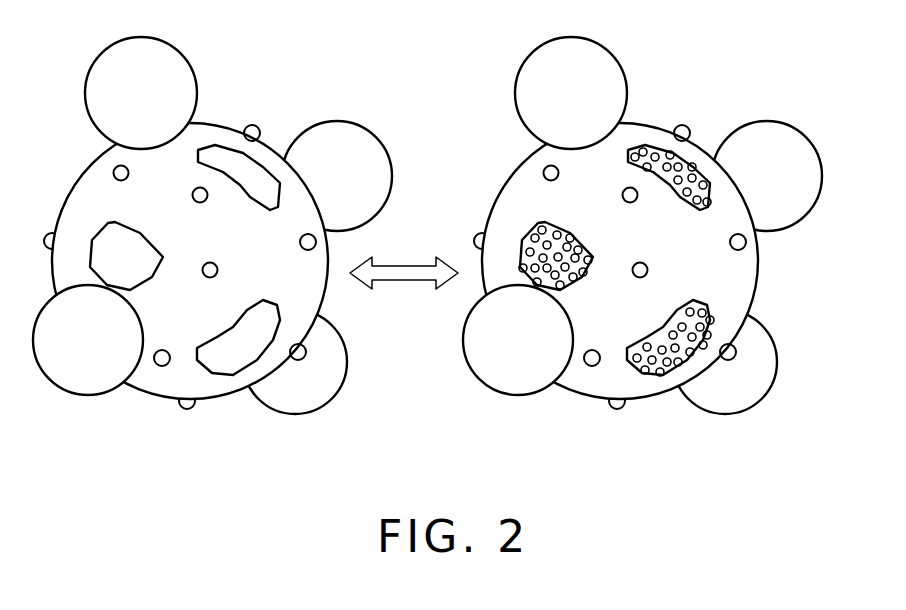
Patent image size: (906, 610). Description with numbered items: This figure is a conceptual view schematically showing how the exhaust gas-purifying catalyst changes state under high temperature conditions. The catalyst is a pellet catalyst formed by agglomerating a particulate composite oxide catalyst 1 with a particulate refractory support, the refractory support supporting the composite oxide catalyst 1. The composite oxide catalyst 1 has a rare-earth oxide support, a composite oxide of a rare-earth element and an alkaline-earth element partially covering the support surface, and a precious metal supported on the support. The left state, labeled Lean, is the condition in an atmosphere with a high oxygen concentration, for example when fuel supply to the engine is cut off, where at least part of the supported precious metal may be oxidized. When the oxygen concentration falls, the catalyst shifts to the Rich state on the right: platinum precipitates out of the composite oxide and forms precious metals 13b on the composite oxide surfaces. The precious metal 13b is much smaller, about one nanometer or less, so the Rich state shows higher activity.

The composite oxide catalyst 1 is at (424, 263).
The precious metal 13b is at (572, 262).